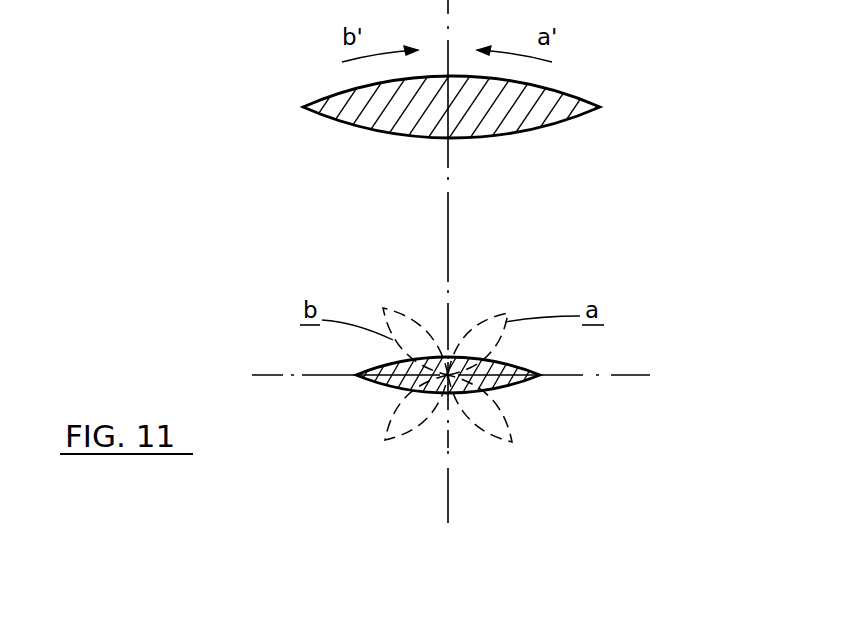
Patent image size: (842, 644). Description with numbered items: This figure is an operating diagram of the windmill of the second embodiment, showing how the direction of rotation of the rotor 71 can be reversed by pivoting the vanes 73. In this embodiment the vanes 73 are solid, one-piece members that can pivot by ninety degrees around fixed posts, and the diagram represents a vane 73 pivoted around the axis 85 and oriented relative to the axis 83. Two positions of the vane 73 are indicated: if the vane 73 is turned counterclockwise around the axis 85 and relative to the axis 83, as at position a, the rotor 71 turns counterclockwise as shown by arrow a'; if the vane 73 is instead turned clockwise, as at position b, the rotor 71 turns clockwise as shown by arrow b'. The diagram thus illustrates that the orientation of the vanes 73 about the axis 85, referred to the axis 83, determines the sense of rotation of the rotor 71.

The rotor 71 is at (553, 86).
The vanes 73 is at (520, 364).
The axis 83 is at (640, 378).
The axis 85 is at (447, 508).